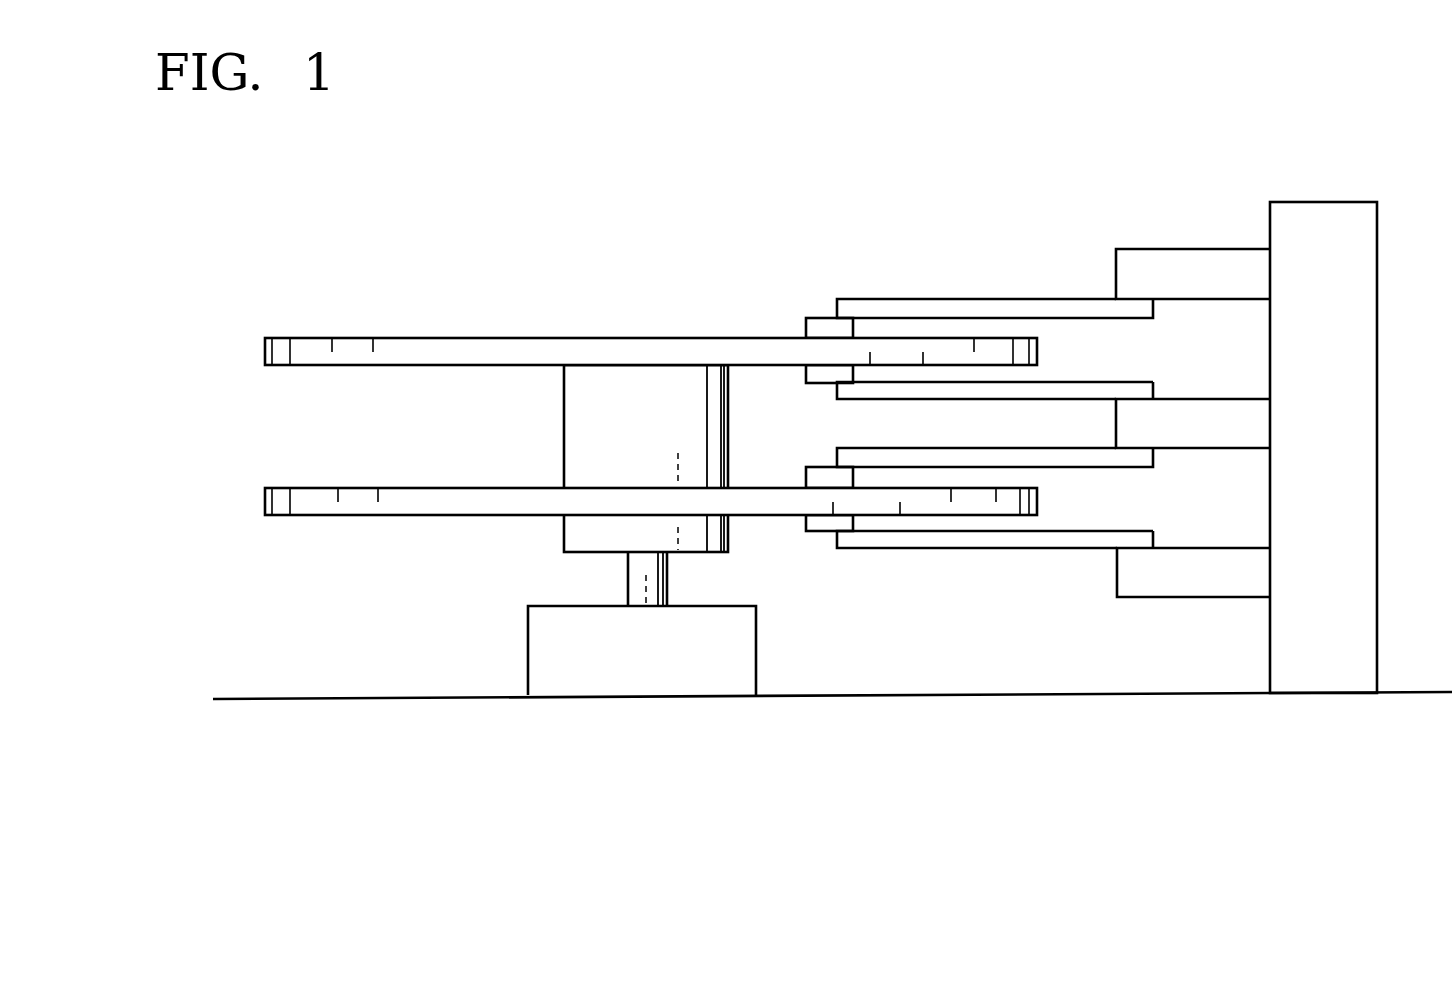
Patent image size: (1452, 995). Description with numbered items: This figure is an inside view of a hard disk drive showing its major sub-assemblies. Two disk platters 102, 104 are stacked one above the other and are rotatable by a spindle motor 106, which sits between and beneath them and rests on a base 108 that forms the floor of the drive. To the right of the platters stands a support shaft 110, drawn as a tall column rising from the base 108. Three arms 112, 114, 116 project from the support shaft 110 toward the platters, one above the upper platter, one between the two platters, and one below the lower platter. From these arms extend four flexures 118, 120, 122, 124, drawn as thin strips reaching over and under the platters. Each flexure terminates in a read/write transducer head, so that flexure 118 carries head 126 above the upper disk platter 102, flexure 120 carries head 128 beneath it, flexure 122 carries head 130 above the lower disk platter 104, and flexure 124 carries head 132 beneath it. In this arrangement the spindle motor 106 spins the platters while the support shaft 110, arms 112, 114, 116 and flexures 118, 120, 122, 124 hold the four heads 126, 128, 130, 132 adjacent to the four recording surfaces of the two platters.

The disk platter 102 is at (248, 354).
The disk platter 104 is at (258, 507).
The spindle motor 106 is at (667, 464).
The base 108 is at (352, 708).
The support shaft 110 is at (1350, 438).
The arm 112 is at (1220, 303).
The arm 114 is at (1213, 458).
The arm 116 is at (1212, 603).
The flexure 118 is at (1012, 298).
The flexure 120 is at (943, 402).
The flexure 122 is at (1028, 447).
The flexure 124 is at (1002, 553).
The read/write transducer head 126 is at (803, 316).
The read/write transducer head 128 is at (803, 387).
The read/write transducer head 130 is at (803, 467).
The read/write transducer head 132 is at (805, 536).